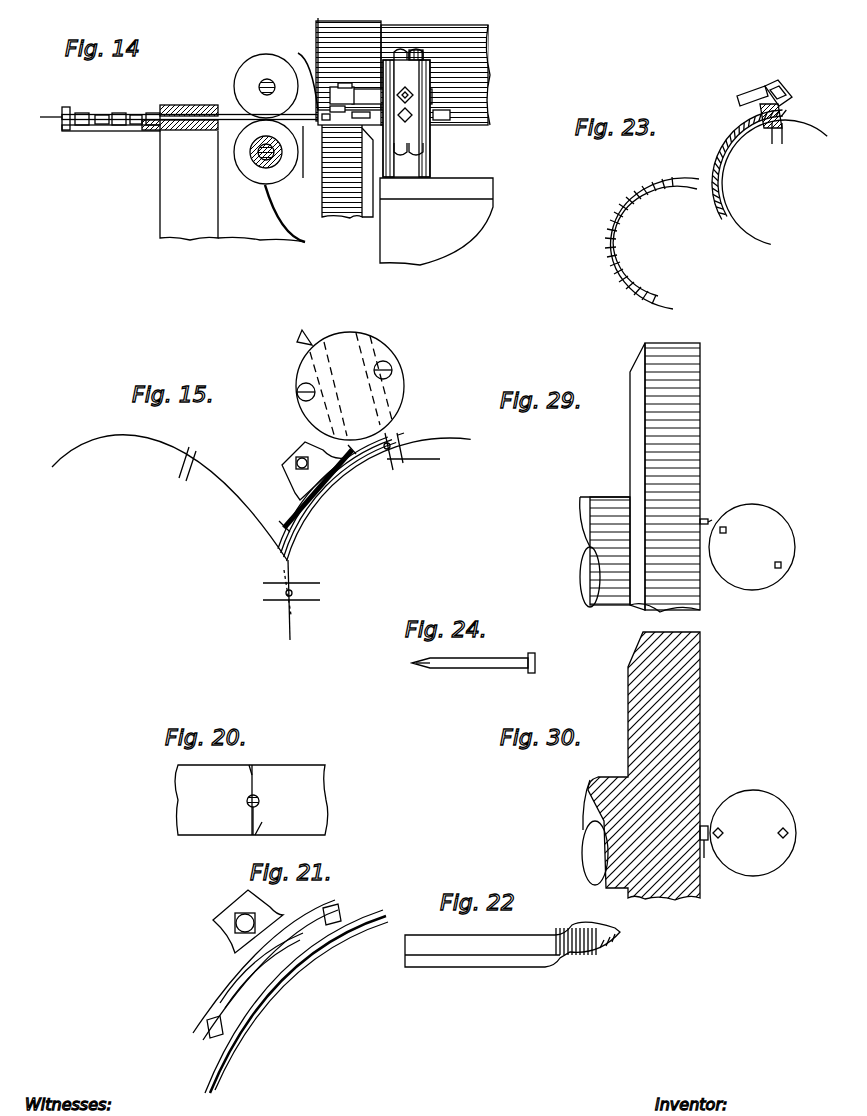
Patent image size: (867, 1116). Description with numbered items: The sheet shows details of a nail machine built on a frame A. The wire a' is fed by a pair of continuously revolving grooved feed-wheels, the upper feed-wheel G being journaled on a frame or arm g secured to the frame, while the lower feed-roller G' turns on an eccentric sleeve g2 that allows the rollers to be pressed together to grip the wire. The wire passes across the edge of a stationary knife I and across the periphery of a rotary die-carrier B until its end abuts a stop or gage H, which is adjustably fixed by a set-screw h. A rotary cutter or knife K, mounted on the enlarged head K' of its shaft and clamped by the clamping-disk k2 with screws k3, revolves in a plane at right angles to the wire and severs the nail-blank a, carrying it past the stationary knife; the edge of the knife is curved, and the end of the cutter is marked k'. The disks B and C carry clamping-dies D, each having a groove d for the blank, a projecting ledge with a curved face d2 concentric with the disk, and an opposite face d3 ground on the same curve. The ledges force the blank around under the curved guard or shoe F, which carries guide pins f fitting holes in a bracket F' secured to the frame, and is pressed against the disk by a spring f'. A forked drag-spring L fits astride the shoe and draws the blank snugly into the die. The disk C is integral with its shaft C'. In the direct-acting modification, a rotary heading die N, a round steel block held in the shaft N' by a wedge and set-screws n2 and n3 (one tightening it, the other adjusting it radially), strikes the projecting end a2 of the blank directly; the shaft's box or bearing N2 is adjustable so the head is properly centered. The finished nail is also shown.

In FIG. 14, the wire a' is at (179, 93).
In FIG. 14, the frame A is at (326, 198).
In FIG. 14, the box or bearing N2 is at (268, 213).
In FIG. 30, the box or bearing N2 is at (753, 833).
In FIG. 14, the upper feed-wheel G is at (266, 86).
In FIG. 14, the lower feed-roller G' is at (266, 152).
In FIG. 14, the frame or arm g is at (254, 160).
In FIG. 14, the eccentric sleeve g2 is at (263, 160).
In FIG. 14, the stationary knife I is at (299, 157).
In FIG. 14, the rotary cutter or knife K is at (301, 76).
In FIG. 15, the rotary cutter or knife K is at (361, 369).
In FIG. 30, the rotary cutter or knife K is at (604, 906).
In FIG. 22, the rotary cutter or knife K is at (512, 930).
In FIG. 14, the clamping-disk k2 is at (303, 55).
In FIG. 15, the clamping-disk k2 is at (344, 368).
In FIG. 14, the head of the cutter-shaft K' is at (348, 119).
In FIG. 14, the cutter edge k' is at (354, 85).
In FIG. 15, the screws or threaded bolts k3 is at (297, 392).
In FIG. 14, the drag-spring L is at (358, 120).
In FIG. 23, the drag-spring L is at (760, 110).
In FIG. 14, the nail-blank a is at (321, 137).
In FIG. 23, the nail-blank a is at (790, 133).
In FIG. 15, the nail-blank a is at (338, 519).
In FIG. 20, the nail-blank a is at (263, 790).
In FIG. 14, the stop or gage H is at (372, 92).
In FIG. 23, the stop or gage H is at (740, 98).
In FIG. 14, the set-screw h is at (410, 118).
In FIG. 23, the rotary die-carrier C is at (652, 243).
In FIG. 15, the rotary die-carrier C is at (169, 497).
In FIG. 29, the rotary die-carrier C is at (665, 477).
In FIG. 30, the rotary die-carrier C is at (657, 766).
In FIG. 29, the shaft of die-carrier C C' is at (605, 552).
In FIG. 30, the shaft of die-carrier C C' is at (582, 832).
In FIG. 23, the rotary die-carrier B is at (774, 182).
In FIG. 15, the rotary die-carrier B is at (379, 499).
In FIG. 23, the curved guard or shoe F is at (742, 165).
In FIG. 15, the curved guard or shoe F is at (337, 497).
In FIG. 21, the curved guard or shoe F is at (290, 996).
In FIG. 21, the bracket F' is at (234, 915).
In FIG. 21, the guide pins or studs f is at (274, 979).
In FIG. 21, the spring f' is at (261, 974).
In FIG. 15, the clamping-die D is at (158, 503).
In FIG. 20, the clamping-die D is at (186, 808).
In FIG. 20, the groove d is at (259, 804).
In FIG. 20, the curved face of ledge d2 is at (255, 768).
In FIG. 20, the face of die d3 is at (250, 770).
In FIG. 29, the projecting end of nail-blank a2 is at (706, 518).
In FIG. 29, the rotary heading die or tool N is at (722, 508).
In FIG. 30, the rotary heading die or tool N is at (709, 855).
In FIG. 29, the heading-die shaft N' is at (752, 547).
In FIG. 29, the set-screw n2 is at (727, 530).
In FIG. 30, the set-screw n2 is at (722, 831).
In FIG. 29, the set-screw n3 is at (775, 565).
In FIG. 30, the set-screw n3 is at (781, 830).